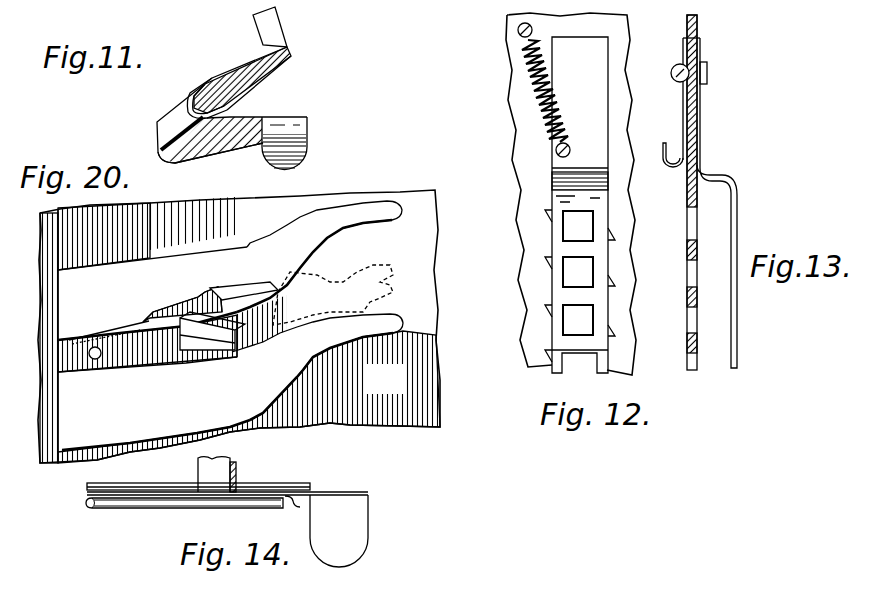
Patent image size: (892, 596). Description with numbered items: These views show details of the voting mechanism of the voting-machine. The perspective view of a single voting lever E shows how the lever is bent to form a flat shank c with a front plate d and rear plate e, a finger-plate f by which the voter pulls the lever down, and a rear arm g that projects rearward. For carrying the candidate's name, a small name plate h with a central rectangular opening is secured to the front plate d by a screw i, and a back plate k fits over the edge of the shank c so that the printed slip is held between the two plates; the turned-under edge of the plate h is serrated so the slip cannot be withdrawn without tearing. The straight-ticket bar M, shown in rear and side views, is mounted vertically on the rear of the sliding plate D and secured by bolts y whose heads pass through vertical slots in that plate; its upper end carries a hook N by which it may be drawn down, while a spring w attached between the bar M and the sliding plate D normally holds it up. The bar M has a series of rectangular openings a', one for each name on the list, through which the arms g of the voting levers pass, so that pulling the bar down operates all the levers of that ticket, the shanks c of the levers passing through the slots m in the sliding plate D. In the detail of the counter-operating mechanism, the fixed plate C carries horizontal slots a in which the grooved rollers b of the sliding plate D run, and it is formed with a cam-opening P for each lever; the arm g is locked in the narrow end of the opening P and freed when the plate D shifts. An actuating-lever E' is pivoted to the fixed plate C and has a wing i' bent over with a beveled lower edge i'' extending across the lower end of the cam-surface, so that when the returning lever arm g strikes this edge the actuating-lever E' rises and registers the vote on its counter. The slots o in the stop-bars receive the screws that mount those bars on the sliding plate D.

In FIG. 11, the rear arm g is at (273, 33).
In FIG. 20, the rear arm g is at (202, 345).
In FIG. 11, the rear plate e is at (253, 80).
In FIG. 11, the flat shank c is at (175, 110).
In FIG. 14, the flat shank c is at (236, 465).
In FIG. 11, the voting lever E is at (187, 150).
In FIG. 20, the voting lever E is at (147, 359).
In FIG. 11, the horizontal slot a is at (256, 146).
In FIG. 11, the finger-plate f is at (309, 152).
In FIG. 14, the finger-plate f is at (374, 530).
In FIG. 20, the fixed plate C is at (239, 326).
In FIG. 20, the cam-opening P is at (154, 363).
In FIG. 20, the actuating-lever E' is at (182, 293).
In FIG. 20, the wing i' is at (244, 275).
In FIG. 20, the beveled lower edge i'' is at (311, 300).
In FIG. 20, the grooved roller b is at (372, 212).
In FIG. 20, the name plate h is at (93, 347).
In FIG. 14, the name plate h is at (95, 508).
In FIG. 20, the slot o is at (95, 353).
In FIG. 14, the back plate k is at (130, 483).
In FIG. 14, the front plate d is at (325, 491).
In FIG. 14, the screw i is at (292, 514).
In FIG. 12, the spring w is at (525, 67).
In FIG. 12, the straight-ticket bar M is at (580, 205).
In FIG. 13, the straight-ticket bar M is at (739, 202).
In FIG. 12, the sliding plate D is at (571, 194).
In FIG. 13, the sliding plate D is at (688, 203).
In FIG. 12, the rectangular opening a' is at (540, 273).
In FIG. 12, the slot m is at (612, 325).
In FIG. 13, the slot m is at (687, 272).
In FIG. 13, the bolt y is at (695, 73).
In FIG. 13, the hook N is at (672, 167).